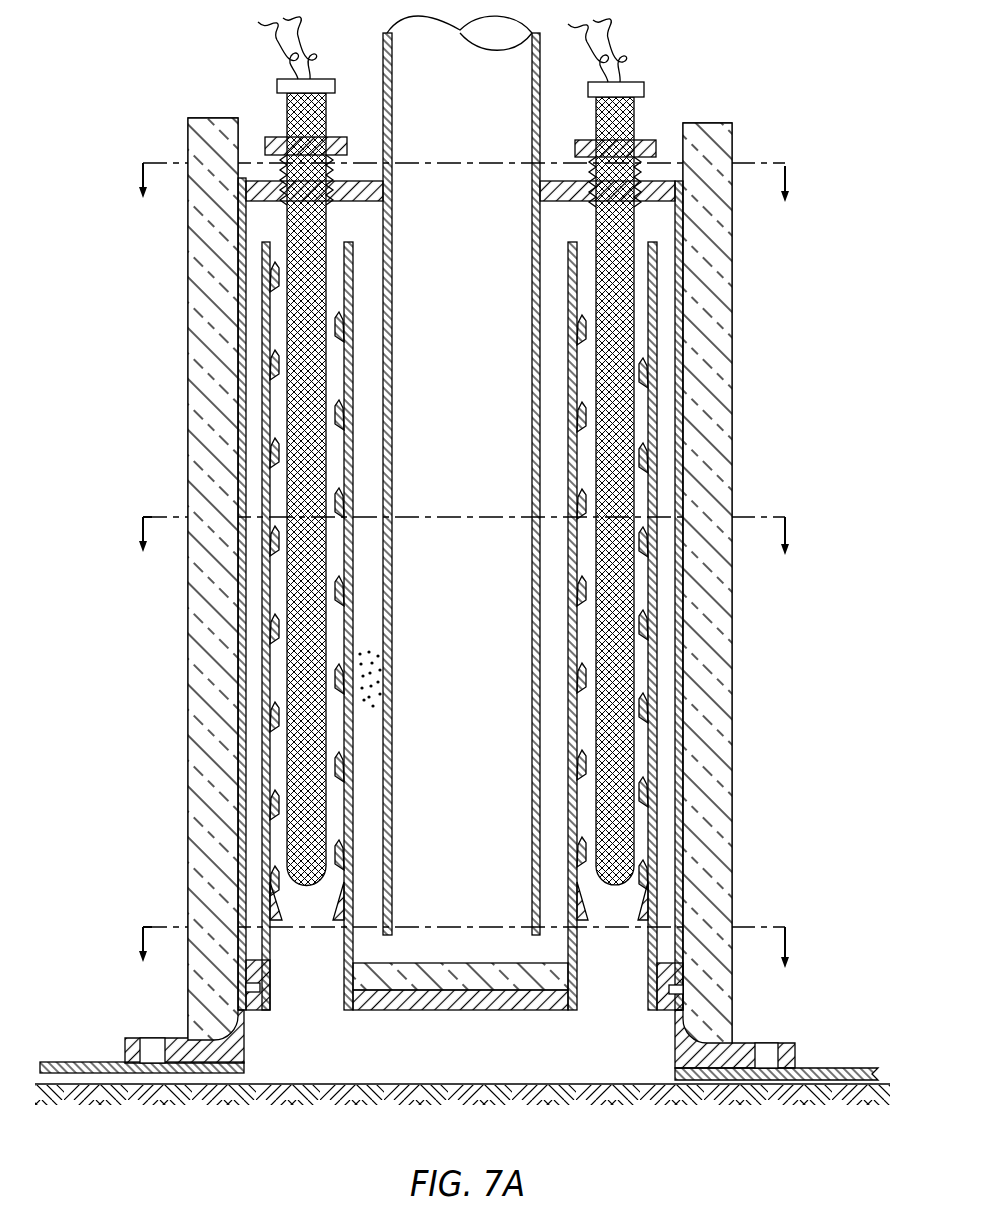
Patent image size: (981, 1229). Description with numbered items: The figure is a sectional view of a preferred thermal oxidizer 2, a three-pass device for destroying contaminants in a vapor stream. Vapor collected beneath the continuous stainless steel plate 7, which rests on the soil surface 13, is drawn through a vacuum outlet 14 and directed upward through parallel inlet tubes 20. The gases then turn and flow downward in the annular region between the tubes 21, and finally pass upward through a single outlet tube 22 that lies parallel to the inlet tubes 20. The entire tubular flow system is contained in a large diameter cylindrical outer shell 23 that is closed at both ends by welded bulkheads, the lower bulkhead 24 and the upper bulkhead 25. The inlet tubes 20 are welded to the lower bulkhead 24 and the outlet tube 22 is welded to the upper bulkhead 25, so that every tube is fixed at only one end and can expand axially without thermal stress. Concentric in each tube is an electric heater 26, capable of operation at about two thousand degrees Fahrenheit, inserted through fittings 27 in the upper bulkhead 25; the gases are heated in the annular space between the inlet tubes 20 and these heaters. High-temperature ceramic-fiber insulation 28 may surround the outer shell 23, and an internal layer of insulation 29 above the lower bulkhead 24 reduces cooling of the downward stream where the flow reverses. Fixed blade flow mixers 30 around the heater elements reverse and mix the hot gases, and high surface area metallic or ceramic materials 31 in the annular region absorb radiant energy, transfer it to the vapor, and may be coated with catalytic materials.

The thermal oxidizer 2 is at (85, 302).
The continuous stainless steel plate 7 is at (86, 1062).
The soil surface 13 is at (302, 1085).
The vacuum outlet 14 is at (668, 1082).
The inlet tubes 20 is at (658, 318).
The annular region between the tubes 21 is at (362, 382).
The outlet tube 22 is at (383, 420).
The cylindrical outer shell 23 is at (240, 458).
The lower bulkhead 24 is at (508, 1012).
The upper bulkhead 25 is at (262, 182).
The electric heaters 26 is at (612, 678).
The fittings 27 is at (276, 176).
The ceramic-fiber insulation 28 is at (723, 870).
The internal layer of insulation 29 is at (458, 963).
The fixed blade flow mixers 30 is at (272, 700).
The high surface area metallic or ceramic materials 31 is at (363, 697).